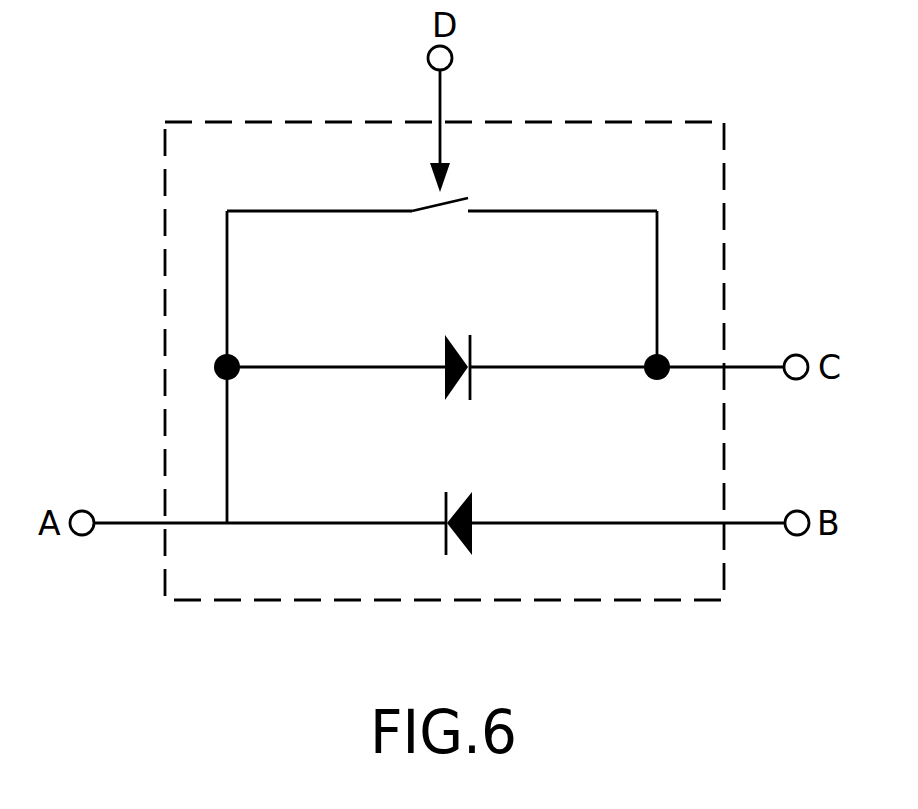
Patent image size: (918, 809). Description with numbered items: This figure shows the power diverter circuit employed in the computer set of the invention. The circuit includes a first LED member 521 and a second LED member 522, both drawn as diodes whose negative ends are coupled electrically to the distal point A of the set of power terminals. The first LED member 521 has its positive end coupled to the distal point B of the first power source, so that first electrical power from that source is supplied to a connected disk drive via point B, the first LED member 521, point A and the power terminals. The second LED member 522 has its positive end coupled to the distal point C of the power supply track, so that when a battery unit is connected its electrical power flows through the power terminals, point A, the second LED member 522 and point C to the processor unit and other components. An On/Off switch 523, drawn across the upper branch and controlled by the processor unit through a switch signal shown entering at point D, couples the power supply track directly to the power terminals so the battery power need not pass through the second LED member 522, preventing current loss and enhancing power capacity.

The first LED member 521 is at (472, 510).
The second LED member 522 is at (446, 358).
The On/Off switch 523 is at (460, 196).